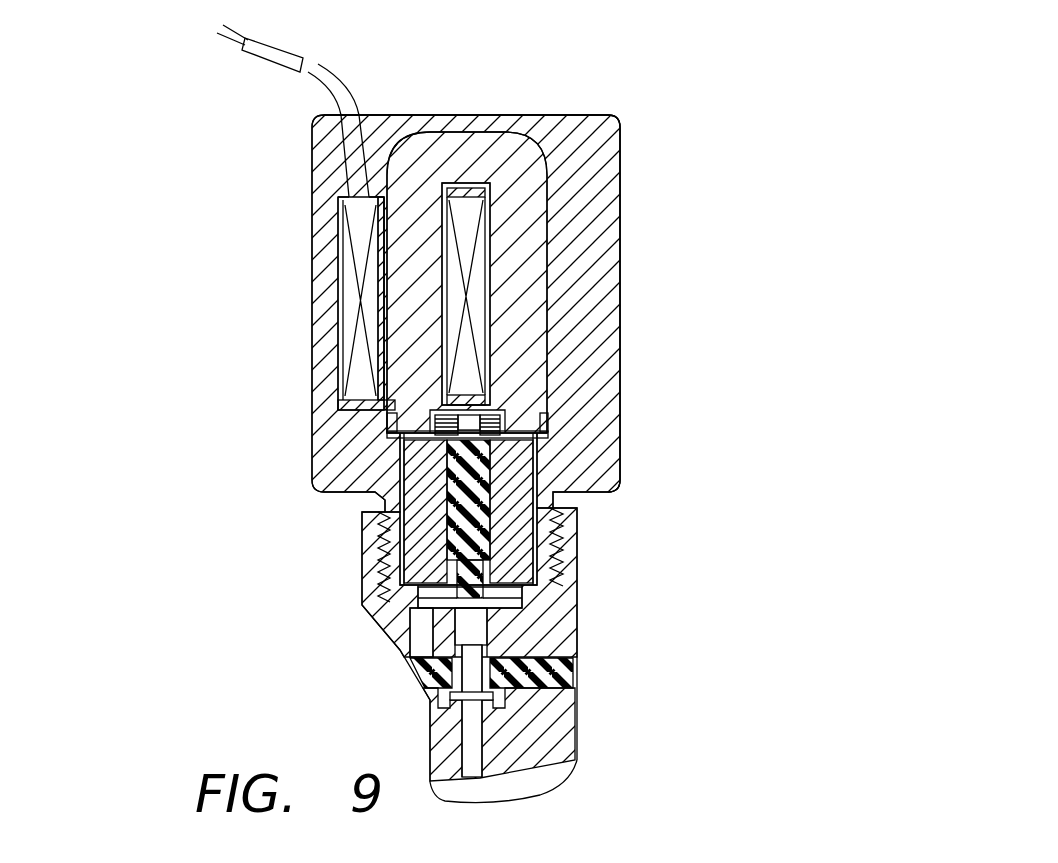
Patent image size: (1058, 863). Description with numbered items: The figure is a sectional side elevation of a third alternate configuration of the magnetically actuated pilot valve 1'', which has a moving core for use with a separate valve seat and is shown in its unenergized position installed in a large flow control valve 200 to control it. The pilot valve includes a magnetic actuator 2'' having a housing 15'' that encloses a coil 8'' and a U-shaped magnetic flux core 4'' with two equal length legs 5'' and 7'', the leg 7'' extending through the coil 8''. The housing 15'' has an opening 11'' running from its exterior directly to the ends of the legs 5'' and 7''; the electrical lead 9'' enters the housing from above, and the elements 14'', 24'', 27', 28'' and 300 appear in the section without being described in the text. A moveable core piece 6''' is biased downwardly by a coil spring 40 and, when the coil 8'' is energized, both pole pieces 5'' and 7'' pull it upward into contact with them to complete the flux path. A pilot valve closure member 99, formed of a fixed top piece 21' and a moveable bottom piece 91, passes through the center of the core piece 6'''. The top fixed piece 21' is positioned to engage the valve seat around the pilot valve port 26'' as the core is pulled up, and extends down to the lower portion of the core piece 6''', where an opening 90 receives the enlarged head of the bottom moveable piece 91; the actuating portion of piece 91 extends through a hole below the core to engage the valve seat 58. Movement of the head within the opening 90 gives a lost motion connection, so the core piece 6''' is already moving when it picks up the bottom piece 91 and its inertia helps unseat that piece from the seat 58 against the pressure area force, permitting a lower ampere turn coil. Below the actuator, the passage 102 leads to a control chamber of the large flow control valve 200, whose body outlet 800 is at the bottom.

The magnetically actuated pilot valve 1'' is at (558, 303).
The magnetic actuator 2'' is at (544, 313).
The magnetic flux core 4'' is at (454, 298).
The leg of magnetic flux core 5'' is at (617, 294).
The moveable core piece 6''' is at (548, 509).
The leg of magnetic flux core 7'' is at (364, 282).
The coil 8'' is at (280, 288).
The electrical cable and connector 9'' is at (346, 100).
The opening 11'' is at (394, 434).
The plunger 14'' is at (328, 496).
The housing 15'' is at (536, 290).
The top fixed piece 21' is at (567, 511).
The retaining ring 24'' is at (492, 429).
The pilot valve port 26'' is at (598, 414).
The seat plate 27' is at (589, 571).
The spring 28'' is at (595, 398).
The coil spring 40 is at (437, 418).
The valve seat 58 is at (478, 622).
The opening 90 is at (423, 557).
The bottom moveable piece 91 is at (447, 593).
The pilot valve closure member 99 is at (452, 565).
The passage 102 is at (430, 605).
The large flow control valve 200 is at (580, 642).
The seal 300 is at (572, 688).
The body outlet 800 is at (520, 742).